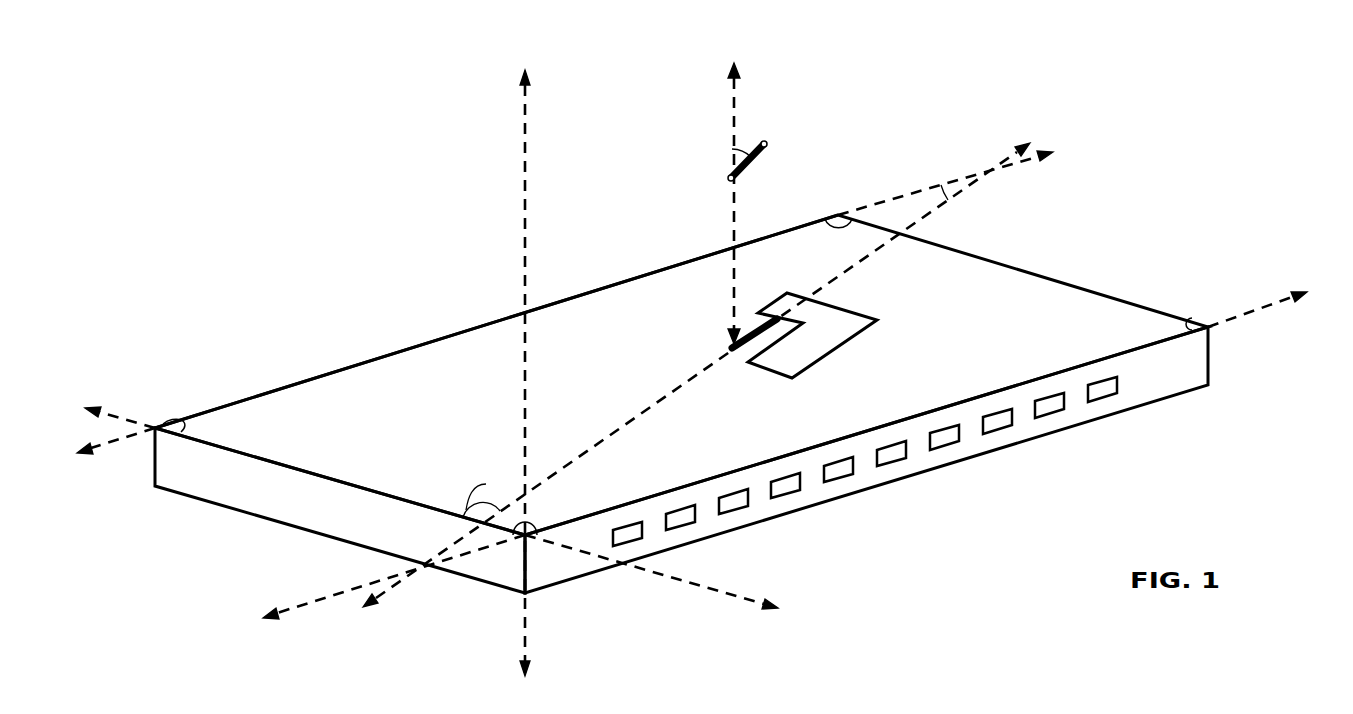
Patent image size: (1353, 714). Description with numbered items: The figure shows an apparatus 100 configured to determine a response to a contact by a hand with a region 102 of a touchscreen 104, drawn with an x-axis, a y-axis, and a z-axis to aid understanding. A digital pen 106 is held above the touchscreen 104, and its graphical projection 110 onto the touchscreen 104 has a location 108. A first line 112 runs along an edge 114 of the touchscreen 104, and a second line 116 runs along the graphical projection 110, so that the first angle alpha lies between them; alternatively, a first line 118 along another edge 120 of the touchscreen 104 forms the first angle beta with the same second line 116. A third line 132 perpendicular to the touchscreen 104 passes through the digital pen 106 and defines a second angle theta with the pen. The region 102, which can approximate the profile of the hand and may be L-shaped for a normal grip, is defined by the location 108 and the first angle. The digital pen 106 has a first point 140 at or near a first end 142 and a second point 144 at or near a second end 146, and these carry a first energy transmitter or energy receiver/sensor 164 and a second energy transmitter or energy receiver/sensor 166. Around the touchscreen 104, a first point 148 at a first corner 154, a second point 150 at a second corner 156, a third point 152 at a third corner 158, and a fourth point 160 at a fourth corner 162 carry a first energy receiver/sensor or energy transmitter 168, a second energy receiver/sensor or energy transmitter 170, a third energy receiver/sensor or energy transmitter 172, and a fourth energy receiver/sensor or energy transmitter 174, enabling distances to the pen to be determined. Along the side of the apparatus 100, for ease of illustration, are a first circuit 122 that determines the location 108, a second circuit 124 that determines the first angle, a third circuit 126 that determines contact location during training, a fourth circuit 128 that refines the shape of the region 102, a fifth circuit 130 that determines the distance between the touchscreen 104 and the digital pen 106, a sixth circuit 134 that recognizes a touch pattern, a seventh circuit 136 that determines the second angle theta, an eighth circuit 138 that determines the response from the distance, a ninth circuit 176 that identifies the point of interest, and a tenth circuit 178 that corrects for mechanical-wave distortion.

The apparatus 100 is at (178, 61).
The region 102 is at (840, 334).
The touchscreen 104 is at (1012, 283).
The digital pen 106 is at (745, 149).
The location 108 is at (784, 364).
The graphical projection 110 is at (733, 352).
The first line 112 is at (907, 196).
The edge 114 is at (352, 367).
The second line 116 is at (957, 194).
The first line 118 is at (745, 595).
The edge 120 is at (268, 458).
The first circuit 122 is at (625, 539).
The second circuit 124 is at (678, 523).
The third circuit 126 is at (731, 507).
The fourth circuit 128 is at (783, 491).
The fifth circuit 130 is at (836, 475).
The third line 132 is at (737, 98).
The sixth circuit 134 is at (889, 458).
The seventh circuit 136 is at (942, 442).
The eighth circuit 138 is at (995, 426).
The first point of the digital pen 140 is at (652, 143).
The first end of the digital pen 142 is at (652, 143).
The second point of the digital pen 144 is at (839, 126).
The second end of the digital pen 146 is at (839, 126).
The first point of the touchscreen 148 is at (611, 583).
The second point of the touchscreen 150 is at (1071, 317).
The third point of the touchscreen 152 is at (1047, 238).
The first corner 154 is at (611, 583).
The second corner 156 is at (1071, 317).
The third corner 158 is at (1047, 238).
The fourth point of the touchscreen 160 is at (218, 385).
The fourth corner 162 is at (218, 385).
The energy transmitter or energy receiver/sensor 164 is at (726, 174).
The energy transmitter or energy receiver/sensor 166 is at (759, 140).
The energy receiver/sensor or energy transmitter 168 is at (532, 545).
The energy receiver/sensor or energy transmitter 170 is at (1183, 325).
The energy receiver/sensor or energy transmitter 172 is at (846, 226).
The energy receiver/sensor or energy transmitter 174 is at (180, 428).
The ninth circuit 176 is at (1047, 410).
The tenth circuit 178 is at (1100, 394).